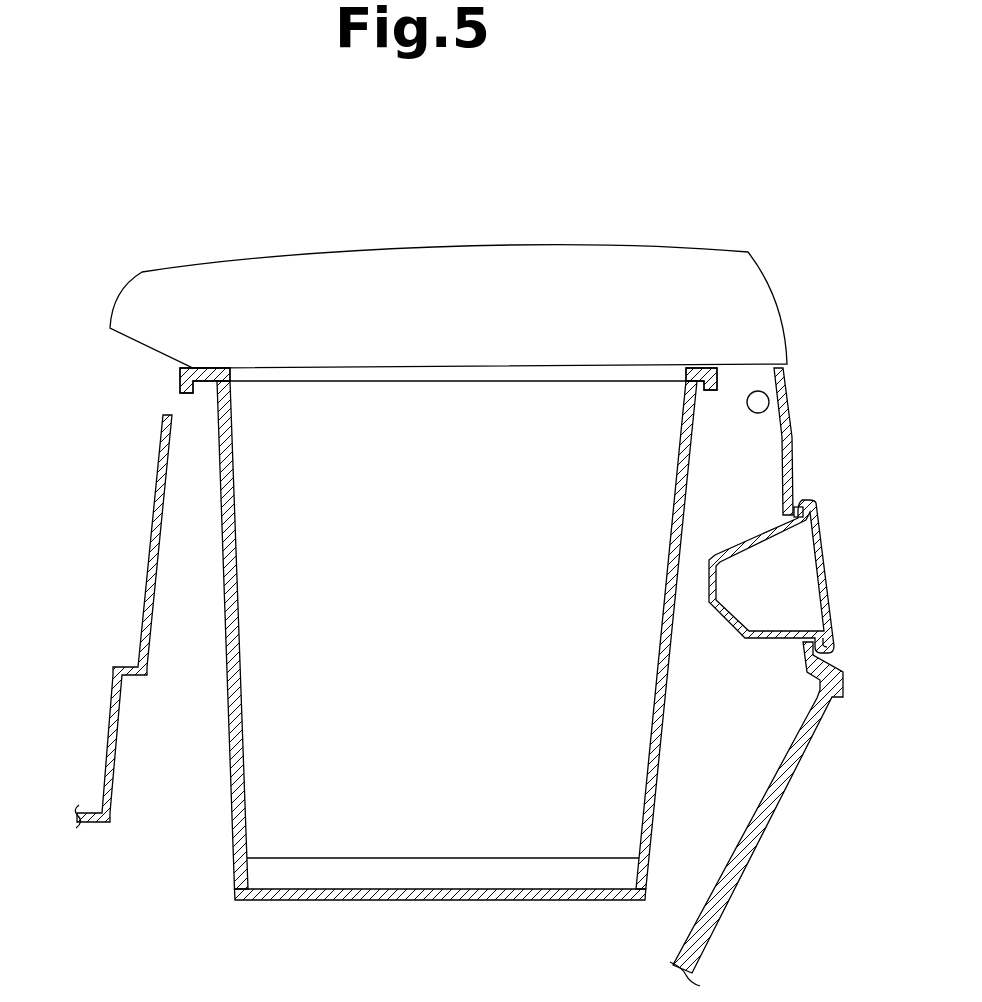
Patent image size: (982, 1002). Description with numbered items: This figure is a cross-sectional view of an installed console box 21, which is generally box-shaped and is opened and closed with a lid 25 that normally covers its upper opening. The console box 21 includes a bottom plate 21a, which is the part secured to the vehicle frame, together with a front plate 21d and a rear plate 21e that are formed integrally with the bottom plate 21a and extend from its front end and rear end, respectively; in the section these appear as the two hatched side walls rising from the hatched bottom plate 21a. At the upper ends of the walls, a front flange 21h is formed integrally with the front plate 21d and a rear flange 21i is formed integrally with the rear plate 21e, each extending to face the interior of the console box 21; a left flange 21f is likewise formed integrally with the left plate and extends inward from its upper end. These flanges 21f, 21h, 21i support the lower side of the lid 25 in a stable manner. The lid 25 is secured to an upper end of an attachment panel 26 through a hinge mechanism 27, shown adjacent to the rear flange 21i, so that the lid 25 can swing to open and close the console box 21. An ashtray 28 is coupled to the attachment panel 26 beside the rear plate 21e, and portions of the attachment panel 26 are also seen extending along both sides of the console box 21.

The console box 21 is at (690, 516).
The bottom plate 21a is at (435, 901).
The front plate 21d is at (231, 775).
The rear plate 21e is at (662, 729).
The left flange 21f is at (455, 382).
The front flange 21h is at (180, 381).
The rear flange 21i is at (717, 374).
The lid 25 is at (482, 277).
The attachment panel 26 is at (150, 543).
The hinge mechanism 27 is at (758, 402).
The ashtray 28 is at (824, 535).